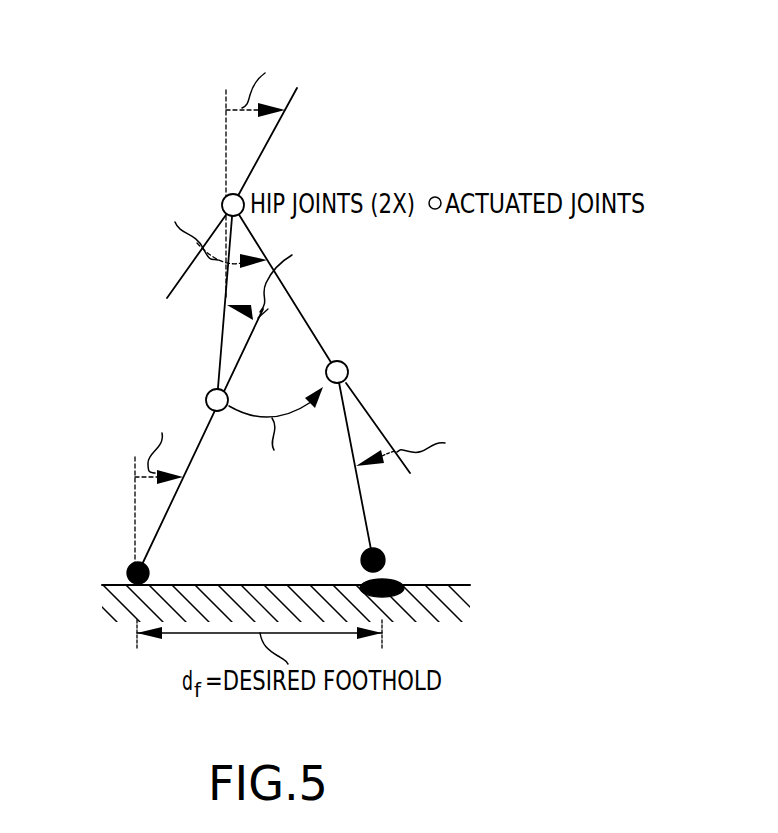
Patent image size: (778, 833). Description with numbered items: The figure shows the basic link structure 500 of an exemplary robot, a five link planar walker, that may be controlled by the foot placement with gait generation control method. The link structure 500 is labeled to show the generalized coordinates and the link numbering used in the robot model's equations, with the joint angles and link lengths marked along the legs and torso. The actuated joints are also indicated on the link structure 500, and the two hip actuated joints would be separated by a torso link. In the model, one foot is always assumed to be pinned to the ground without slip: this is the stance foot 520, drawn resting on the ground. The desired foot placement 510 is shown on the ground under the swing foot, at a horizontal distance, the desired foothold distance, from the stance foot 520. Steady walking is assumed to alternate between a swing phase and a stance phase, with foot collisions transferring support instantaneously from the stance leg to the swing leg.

The link structure 500 is at (100, 93).
The desired foot placement 510 is at (397, 582).
The stance foot 520 is at (128, 571).